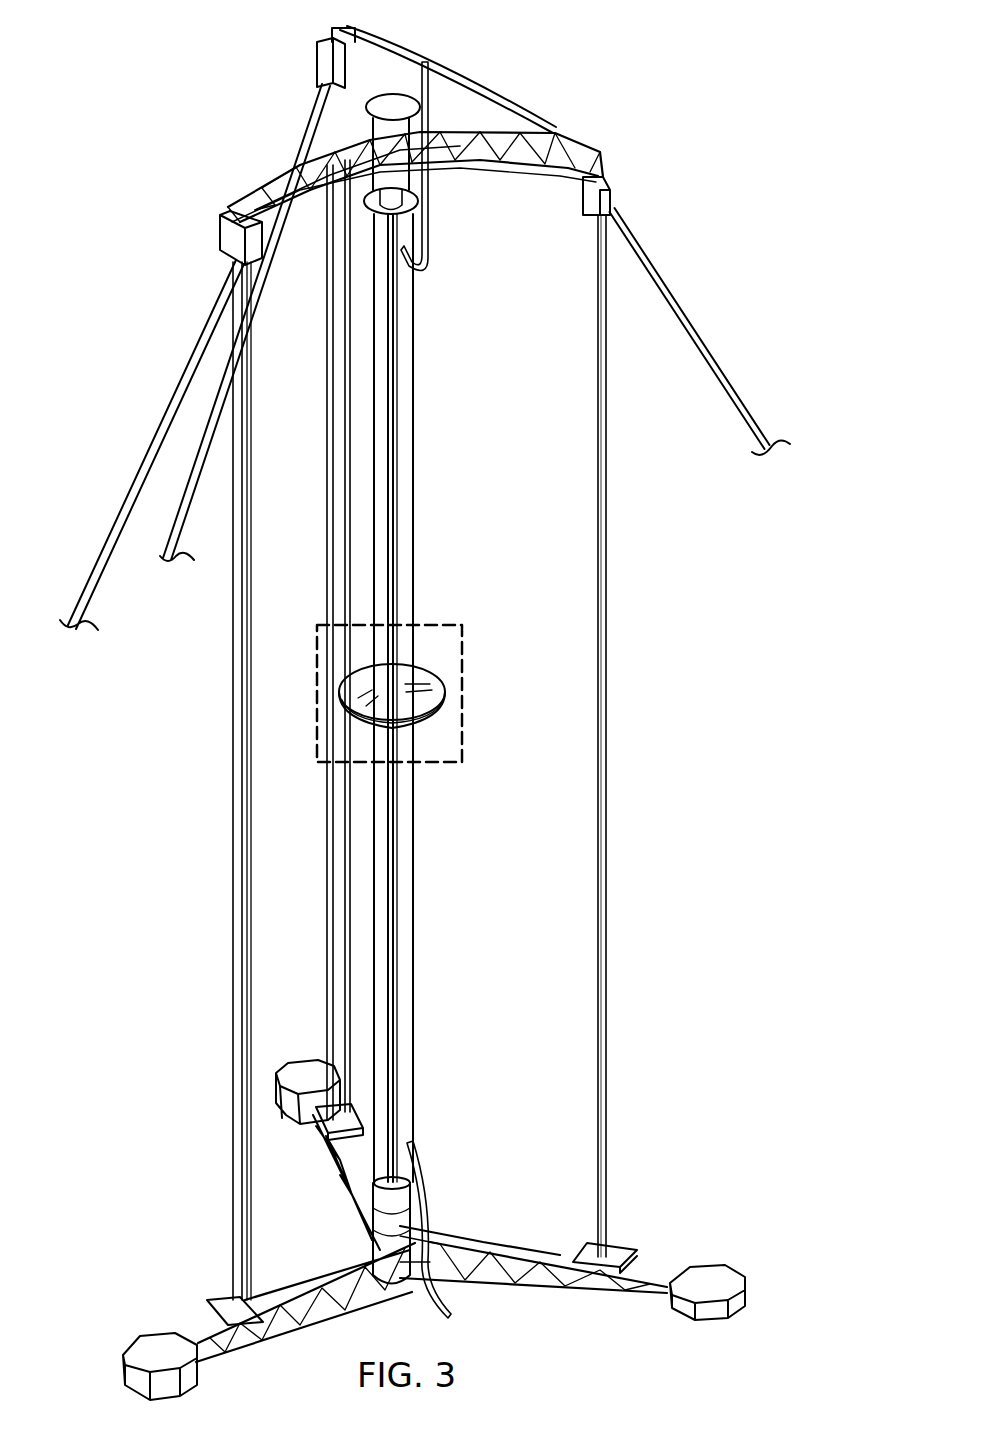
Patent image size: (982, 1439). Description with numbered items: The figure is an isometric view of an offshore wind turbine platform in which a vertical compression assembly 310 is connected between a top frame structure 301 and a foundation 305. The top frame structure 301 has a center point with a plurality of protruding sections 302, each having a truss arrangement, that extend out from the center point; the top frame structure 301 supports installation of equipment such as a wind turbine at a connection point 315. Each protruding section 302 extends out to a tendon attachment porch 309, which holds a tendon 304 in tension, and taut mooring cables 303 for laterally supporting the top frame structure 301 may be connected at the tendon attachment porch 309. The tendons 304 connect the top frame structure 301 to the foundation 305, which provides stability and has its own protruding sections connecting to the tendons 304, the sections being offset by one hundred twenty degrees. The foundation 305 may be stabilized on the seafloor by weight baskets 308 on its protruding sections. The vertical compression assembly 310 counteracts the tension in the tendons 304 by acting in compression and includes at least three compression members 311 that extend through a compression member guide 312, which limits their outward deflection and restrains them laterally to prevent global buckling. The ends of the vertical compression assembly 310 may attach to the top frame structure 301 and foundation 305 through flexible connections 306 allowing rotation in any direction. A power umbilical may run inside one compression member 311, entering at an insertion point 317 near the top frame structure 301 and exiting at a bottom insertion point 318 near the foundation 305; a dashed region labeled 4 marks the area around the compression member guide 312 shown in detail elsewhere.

The detail region of FIG. 4 is at (427, 623).
The top frame structure 301 is at (450, 170).
The protruding section 302 is at (511, 132).
The taut mooring cable 303 is at (152, 418).
The tendon 304 is at (608, 788).
The foundation 305 is at (282, 1273).
The flexible connection 306 is at (403, 1197).
The weight basket 308 is at (747, 1290).
The tendon attachment porch 309 is at (617, 192).
The vertical compression assembly 310 is at (280, 640).
The compression member 311 is at (373, 912).
The compression member guide 312 is at (447, 688).
The connection point 315 is at (394, 101).
The insertion point 317 is at (432, 258).
The bottom insertion point 318 is at (415, 1158).